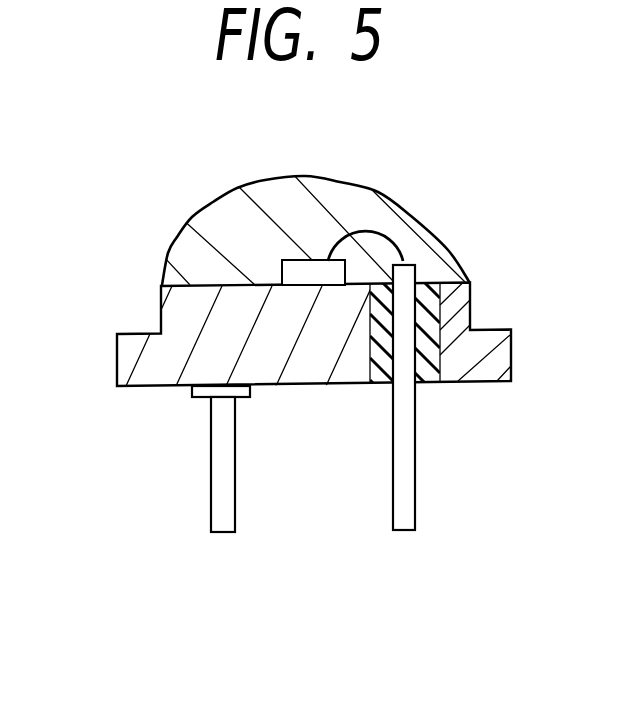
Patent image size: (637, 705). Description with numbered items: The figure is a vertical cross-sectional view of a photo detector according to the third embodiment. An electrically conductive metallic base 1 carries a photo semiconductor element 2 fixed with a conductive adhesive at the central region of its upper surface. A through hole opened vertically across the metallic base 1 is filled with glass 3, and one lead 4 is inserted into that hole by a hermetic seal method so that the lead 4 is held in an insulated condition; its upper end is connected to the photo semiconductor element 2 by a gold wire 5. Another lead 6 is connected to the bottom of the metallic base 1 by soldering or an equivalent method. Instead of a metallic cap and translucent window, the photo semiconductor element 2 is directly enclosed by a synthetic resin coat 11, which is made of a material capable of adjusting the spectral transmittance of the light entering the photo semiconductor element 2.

The metallic base 1 is at (118, 365).
The photo semiconductor element 2 is at (283, 268).
The glass 3 is at (428, 372).
The lead 4 is at (408, 490).
The gold wire 5 is at (385, 236).
The lead 6 is at (216, 495).
The resin coat 11 is at (337, 190).